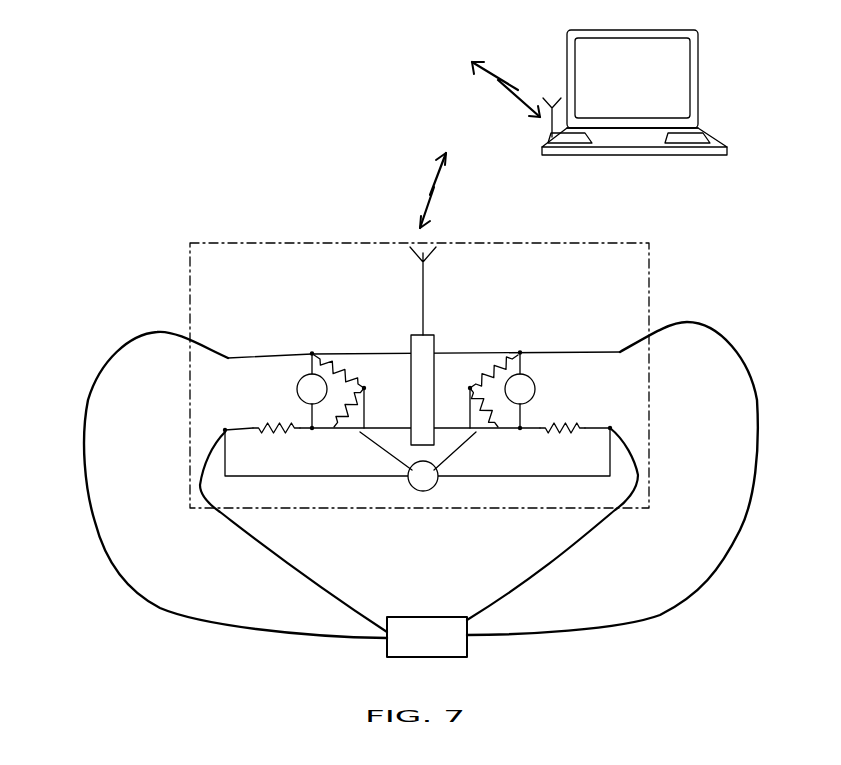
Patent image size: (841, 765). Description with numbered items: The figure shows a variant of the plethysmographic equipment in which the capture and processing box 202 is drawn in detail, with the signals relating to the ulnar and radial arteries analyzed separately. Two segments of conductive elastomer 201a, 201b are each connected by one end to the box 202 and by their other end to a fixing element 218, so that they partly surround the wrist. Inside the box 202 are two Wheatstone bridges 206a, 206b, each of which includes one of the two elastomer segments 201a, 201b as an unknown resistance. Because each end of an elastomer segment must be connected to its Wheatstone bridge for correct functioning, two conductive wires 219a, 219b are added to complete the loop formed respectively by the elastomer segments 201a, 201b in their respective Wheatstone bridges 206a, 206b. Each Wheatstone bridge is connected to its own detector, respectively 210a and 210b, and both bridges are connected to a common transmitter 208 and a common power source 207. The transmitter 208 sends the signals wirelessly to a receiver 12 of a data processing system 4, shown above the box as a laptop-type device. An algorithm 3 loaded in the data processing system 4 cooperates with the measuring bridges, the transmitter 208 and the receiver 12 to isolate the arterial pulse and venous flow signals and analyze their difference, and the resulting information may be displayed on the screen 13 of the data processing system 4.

The receiver 12 is at (556, 154).
The screen 13 is at (658, 60).
The data processing system 4 is at (700, 118).
The algorithm 3 is at (708, 134).
The segment of conductive elastomer 201a is at (92, 473).
The segment of conductive elastomer 201b is at (753, 470).
The box 202 is at (419, 375).
The Wheatstone bridge 206a is at (255, 393).
The Wheatstone bridge 206b is at (550, 360).
The power source 207 is at (415, 490).
The transmitter 208 is at (424, 352).
The detector 210a is at (308, 384).
The detector 210b is at (532, 383).
The fixing element 218 is at (450, 648).
The conductive wire 219a is at (280, 560).
The conductive wire 219b is at (580, 547).